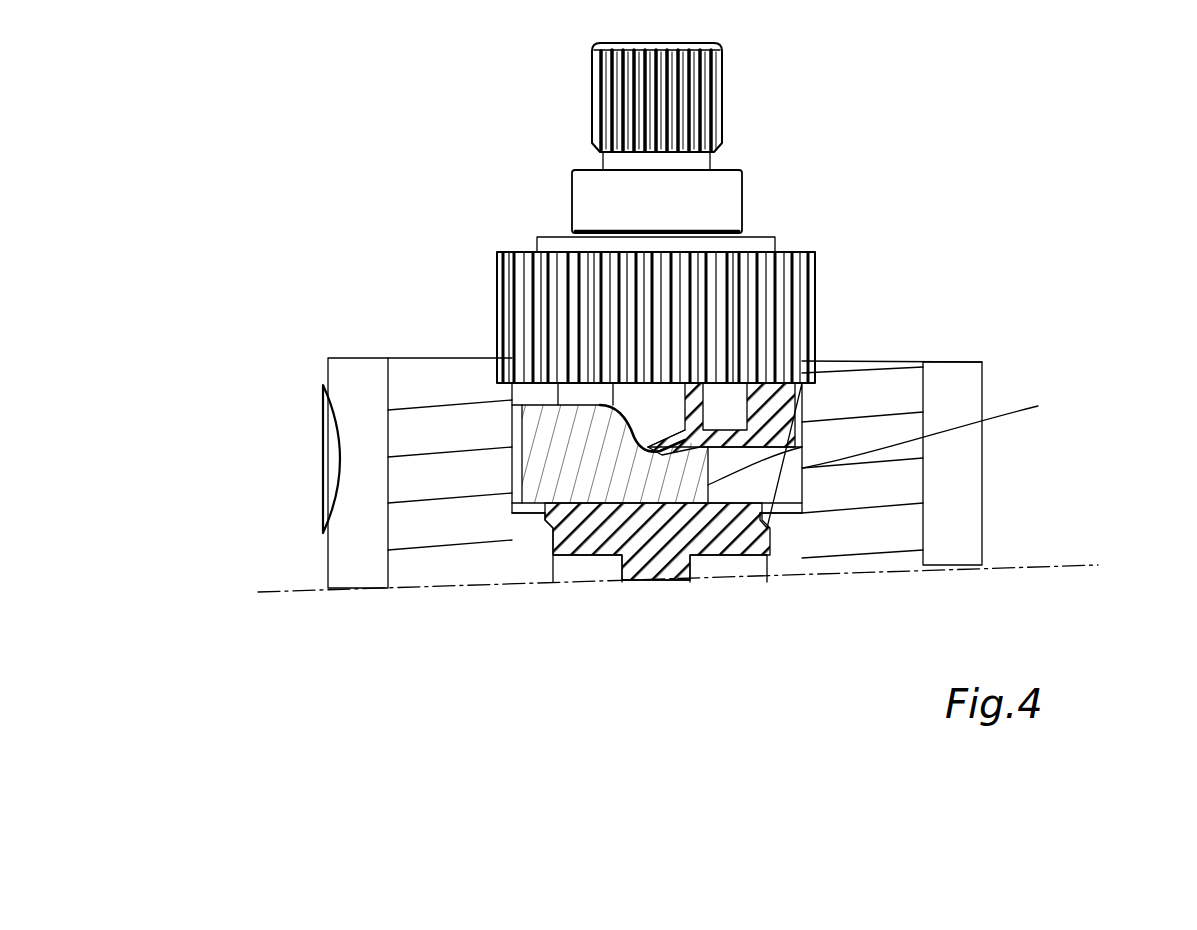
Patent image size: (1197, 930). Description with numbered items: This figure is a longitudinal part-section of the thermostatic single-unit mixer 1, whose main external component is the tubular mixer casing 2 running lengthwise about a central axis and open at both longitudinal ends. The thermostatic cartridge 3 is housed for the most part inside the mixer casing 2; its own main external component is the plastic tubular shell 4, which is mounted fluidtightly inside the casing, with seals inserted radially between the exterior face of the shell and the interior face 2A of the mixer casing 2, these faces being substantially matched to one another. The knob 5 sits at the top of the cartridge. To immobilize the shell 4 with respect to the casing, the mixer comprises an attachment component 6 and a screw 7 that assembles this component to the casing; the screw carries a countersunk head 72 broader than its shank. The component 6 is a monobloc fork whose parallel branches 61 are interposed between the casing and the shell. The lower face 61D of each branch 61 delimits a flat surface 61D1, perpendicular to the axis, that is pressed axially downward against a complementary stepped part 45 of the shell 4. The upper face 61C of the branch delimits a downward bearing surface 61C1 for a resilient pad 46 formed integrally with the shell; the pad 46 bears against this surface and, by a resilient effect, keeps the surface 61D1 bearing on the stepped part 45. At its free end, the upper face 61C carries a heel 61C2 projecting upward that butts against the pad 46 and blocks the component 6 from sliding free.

The single-unit mixer 1 is at (895, 136).
The mixer casing 2 is at (485, 592).
The interior face of the mixer casing 2A is at (556, 572).
The thermostatic cartridge 3 is at (432, 55).
The shell 4 is at (628, 412).
The knob 5 is at (588, 112).
The attachment component 6 is at (496, 332).
The screw 7 is at (326, 430).
The countersunk head 72 is at (321, 462).
The stepped part 45 is at (803, 488).
The resilient pad 46 is at (547, 406).
The branch 61 is at (751, 441).
The upper face of the branch 61C is at (560, 383).
The bearing surface 61C1 is at (696, 396).
The heel 61C2 is at (660, 437).
The lower face of the branch 61D is at (607, 558).
The flat surface 61D1 is at (793, 531).